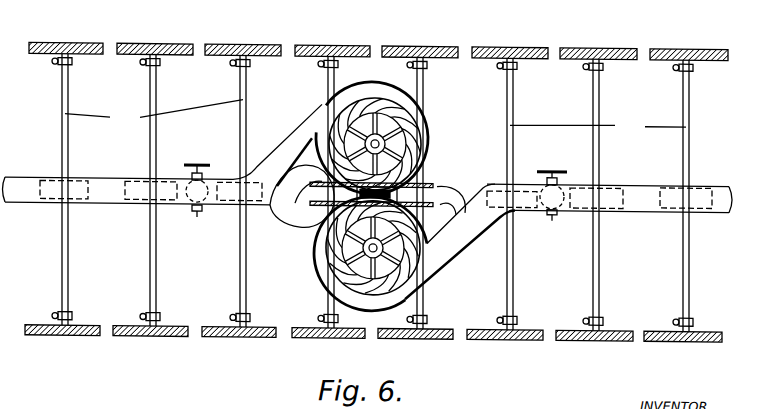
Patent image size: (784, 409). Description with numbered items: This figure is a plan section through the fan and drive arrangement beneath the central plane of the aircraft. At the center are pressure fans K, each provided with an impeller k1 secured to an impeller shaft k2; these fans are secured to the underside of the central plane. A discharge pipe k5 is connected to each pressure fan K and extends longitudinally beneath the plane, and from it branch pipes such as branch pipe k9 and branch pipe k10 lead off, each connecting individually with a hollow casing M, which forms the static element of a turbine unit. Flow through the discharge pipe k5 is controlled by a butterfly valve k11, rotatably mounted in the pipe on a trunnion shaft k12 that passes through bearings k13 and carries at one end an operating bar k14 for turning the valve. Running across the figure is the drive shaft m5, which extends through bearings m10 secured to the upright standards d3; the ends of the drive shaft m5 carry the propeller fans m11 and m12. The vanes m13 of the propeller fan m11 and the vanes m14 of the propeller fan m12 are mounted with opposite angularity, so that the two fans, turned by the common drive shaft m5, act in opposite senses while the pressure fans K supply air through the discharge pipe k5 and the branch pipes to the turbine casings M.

The propeller fan m11 is at (83, 41).
The vanes m13 is at (92, 53).
The bearings m10 is at (238, 62).
The standards d3 is at (143, 64).
The drive shaft m5 is at (375, 116).
The propeller fan m12 is at (235, 333).
The vanes m14 is at (126, 324).
The branch pipe k9 is at (277, 194).
The discharge pipe k5 is at (289, 135).
The pressure fan K is at (431, 106).
The impeller k1 is at (424, 118).
The impeller shaft k2 is at (385, 140).
The hollow casing M is at (440, 181).
The branch pipe k10 is at (460, 186).
The operating bar k14 is at (189, 162).
The bearings k13 is at (204, 171).
The butterfly valve k11 is at (185, 208).
The trunnion shaft k12 is at (200, 216).